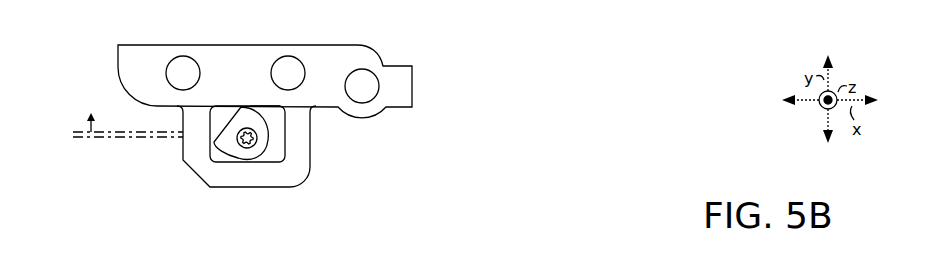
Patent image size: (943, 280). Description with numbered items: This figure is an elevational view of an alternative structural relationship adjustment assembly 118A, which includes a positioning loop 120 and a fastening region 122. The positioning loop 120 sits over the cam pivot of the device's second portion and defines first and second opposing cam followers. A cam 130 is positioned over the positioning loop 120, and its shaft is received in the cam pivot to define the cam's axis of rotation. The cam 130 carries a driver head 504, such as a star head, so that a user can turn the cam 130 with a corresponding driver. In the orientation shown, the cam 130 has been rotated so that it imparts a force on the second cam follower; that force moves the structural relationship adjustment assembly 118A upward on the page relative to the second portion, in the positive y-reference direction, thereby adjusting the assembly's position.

The structural relationship adjustment assembly 118A is at (652, 22).
The fastening region 122 is at (418, 75).
The positioning loop 120 is at (249, 195).
The cam 130 is at (251, 152).
The driver head 504 is at (247, 128).